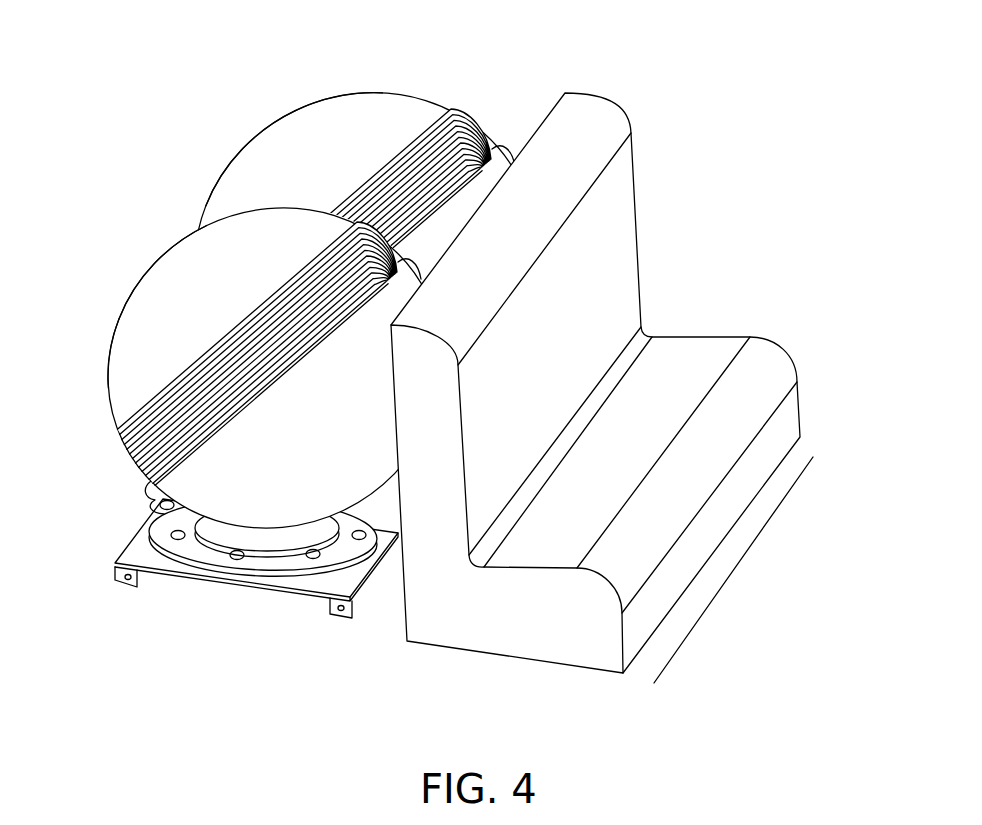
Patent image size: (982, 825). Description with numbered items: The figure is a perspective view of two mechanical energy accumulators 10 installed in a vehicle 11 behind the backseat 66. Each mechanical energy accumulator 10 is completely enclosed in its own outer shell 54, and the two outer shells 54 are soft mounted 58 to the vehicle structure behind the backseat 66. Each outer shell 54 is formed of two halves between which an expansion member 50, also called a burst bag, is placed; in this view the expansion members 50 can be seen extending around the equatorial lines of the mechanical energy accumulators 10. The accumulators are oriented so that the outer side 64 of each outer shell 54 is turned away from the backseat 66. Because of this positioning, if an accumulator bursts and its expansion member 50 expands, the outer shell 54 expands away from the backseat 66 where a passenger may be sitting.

The mechanical energy accumulator 10 is at (402, 110).
The vehicle 11 is at (724, 591).
The expansion member 50 is at (463, 112).
The outer shell 54 is at (218, 181).
The soft mount 58 is at (210, 582).
The outer side of the outer shell 64 is at (297, 107).
The backseat 66 is at (637, 228).